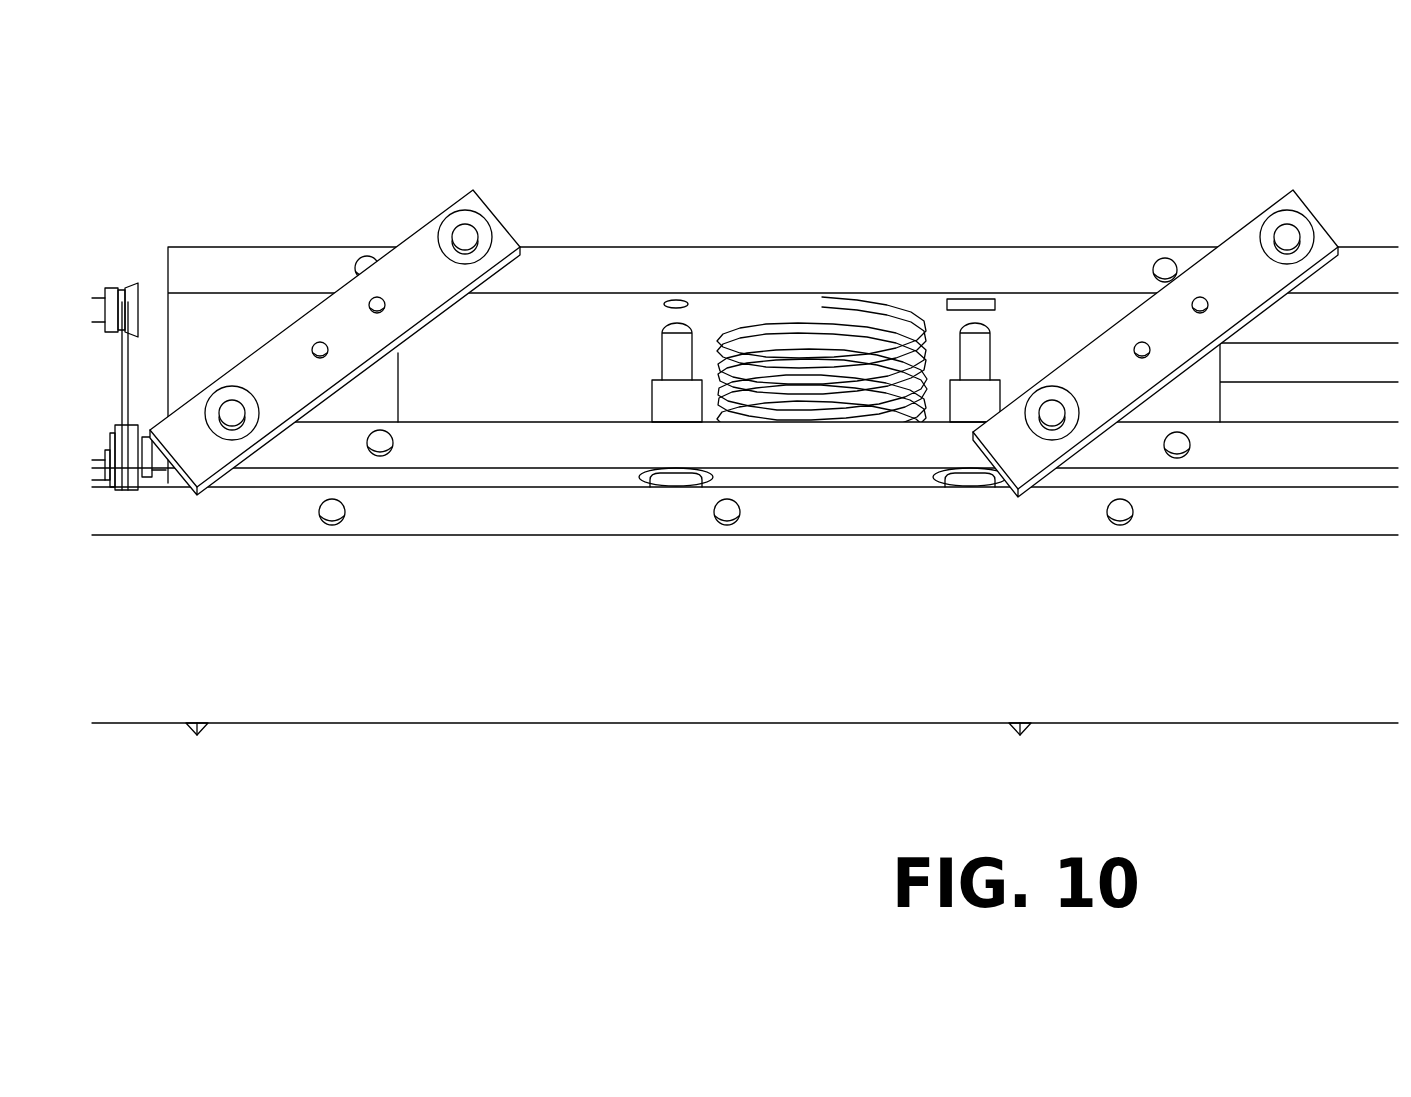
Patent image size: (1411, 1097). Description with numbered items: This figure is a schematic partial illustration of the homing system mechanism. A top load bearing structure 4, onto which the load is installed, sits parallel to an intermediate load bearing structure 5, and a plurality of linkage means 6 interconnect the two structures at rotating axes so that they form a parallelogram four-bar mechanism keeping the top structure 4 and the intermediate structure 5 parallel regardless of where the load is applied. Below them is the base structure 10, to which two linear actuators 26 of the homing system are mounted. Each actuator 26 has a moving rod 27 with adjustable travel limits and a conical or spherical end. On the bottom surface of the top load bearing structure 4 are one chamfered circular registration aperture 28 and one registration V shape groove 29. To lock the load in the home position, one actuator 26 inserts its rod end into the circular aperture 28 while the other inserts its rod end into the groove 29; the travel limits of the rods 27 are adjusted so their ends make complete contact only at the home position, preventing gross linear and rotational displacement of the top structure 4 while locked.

The top load bearing structure 4 is at (1370, 268).
The intermediate load bearing structure 5 is at (467, 448).
The linkage means 6 is at (280, 380).
The base structure 10 is at (500, 692).
The linear actuators 26 is at (673, 393).
The moving rods 27 is at (678, 355).
The chamfered circular registration aperture 28 is at (683, 290).
The registration V shape groove 29 is at (968, 297).